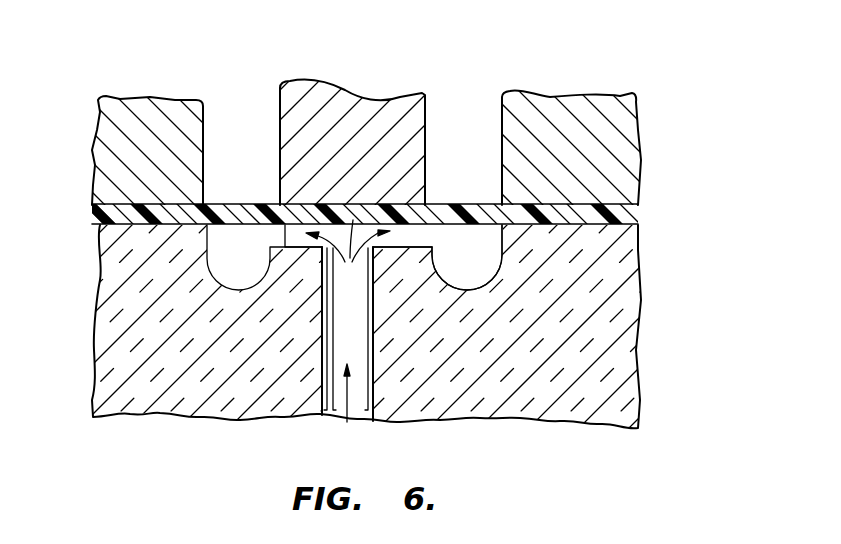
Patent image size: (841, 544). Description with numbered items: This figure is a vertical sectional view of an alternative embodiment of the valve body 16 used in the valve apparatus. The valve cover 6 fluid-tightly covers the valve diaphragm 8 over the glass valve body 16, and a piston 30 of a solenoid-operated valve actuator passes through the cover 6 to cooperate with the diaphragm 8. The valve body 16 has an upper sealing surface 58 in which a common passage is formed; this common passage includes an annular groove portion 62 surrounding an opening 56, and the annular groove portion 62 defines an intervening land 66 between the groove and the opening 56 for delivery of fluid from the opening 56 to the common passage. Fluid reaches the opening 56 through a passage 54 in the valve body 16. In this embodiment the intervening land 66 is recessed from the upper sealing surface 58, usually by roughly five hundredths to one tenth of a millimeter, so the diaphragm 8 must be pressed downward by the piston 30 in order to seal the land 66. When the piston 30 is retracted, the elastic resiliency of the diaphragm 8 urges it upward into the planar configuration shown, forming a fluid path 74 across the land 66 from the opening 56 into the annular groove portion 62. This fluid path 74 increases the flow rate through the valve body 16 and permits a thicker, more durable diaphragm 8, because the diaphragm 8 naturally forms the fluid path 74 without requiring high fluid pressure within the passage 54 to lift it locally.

The valve cover 6 is at (418, 258).
The valve diaphragm 8 is at (92, 213).
The valve body 16 is at (650, 320).
The piston 30 is at (428, 103).
The passage 54 is at (338, 418).
The opening 56 is at (353, 220).
The upper sealing surface 58 is at (708, 208).
The annular groove portion 62 is at (482, 270).
The intervening land 66 is at (280, 203).
The fluid path 74 is at (413, 238).